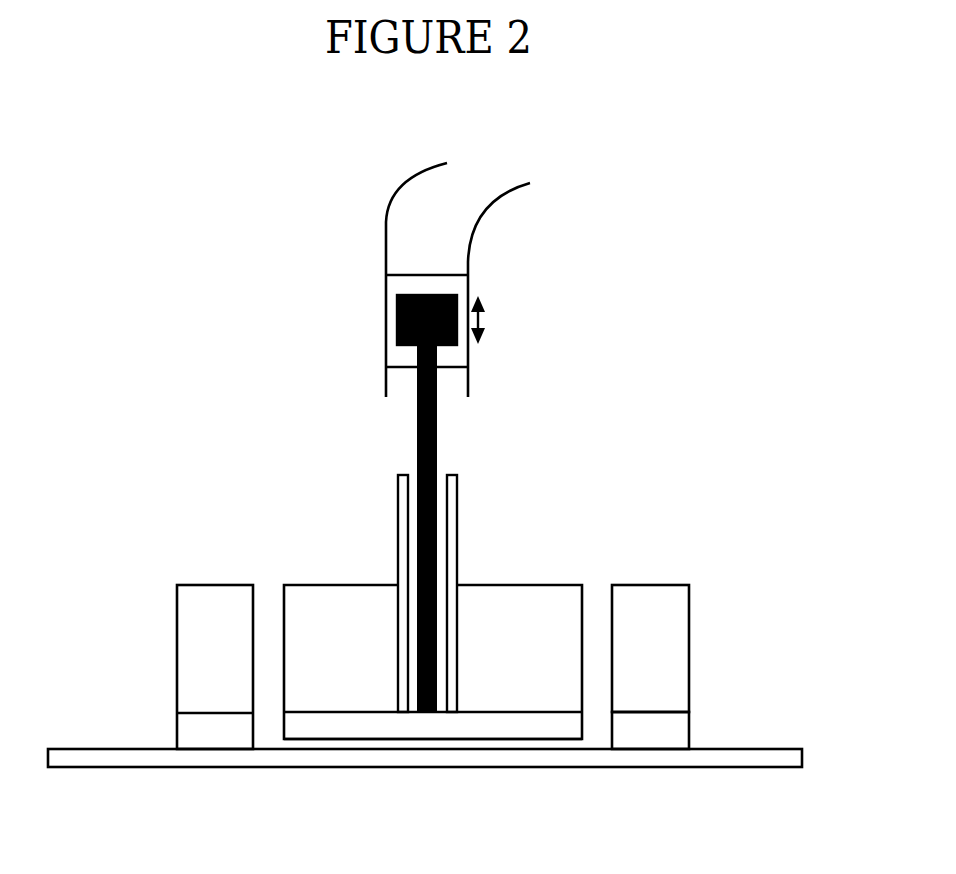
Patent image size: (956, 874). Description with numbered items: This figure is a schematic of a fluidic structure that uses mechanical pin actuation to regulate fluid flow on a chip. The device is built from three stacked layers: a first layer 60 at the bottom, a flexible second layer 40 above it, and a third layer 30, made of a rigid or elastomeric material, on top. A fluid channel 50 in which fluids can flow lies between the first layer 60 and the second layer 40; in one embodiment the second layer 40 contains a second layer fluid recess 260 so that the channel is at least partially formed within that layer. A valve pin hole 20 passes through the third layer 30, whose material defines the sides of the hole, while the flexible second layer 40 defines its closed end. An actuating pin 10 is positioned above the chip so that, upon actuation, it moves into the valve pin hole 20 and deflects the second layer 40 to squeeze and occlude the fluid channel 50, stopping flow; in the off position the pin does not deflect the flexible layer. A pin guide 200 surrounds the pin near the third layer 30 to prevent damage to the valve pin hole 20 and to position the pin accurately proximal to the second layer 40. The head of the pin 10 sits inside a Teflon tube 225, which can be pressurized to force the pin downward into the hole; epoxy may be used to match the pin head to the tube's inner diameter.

The actuating pin 10 is at (438, 427).
The valve pin hole 20 is at (445, 603).
The third layer 30 is at (685, 613).
The second layer 40 is at (685, 727).
The fluid channel 50 is at (260, 668).
The first layer 60 is at (602, 760).
The pin guide 200 is at (395, 485).
The Teflon tube 225 is at (405, 233).
The second layer fluid recess 260 is at (308, 740).